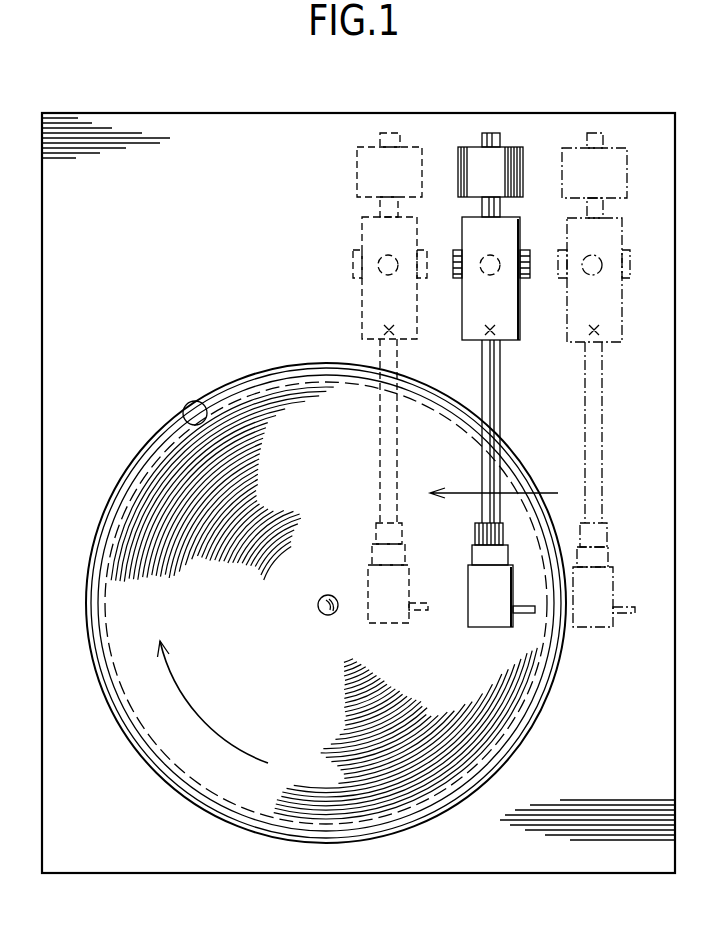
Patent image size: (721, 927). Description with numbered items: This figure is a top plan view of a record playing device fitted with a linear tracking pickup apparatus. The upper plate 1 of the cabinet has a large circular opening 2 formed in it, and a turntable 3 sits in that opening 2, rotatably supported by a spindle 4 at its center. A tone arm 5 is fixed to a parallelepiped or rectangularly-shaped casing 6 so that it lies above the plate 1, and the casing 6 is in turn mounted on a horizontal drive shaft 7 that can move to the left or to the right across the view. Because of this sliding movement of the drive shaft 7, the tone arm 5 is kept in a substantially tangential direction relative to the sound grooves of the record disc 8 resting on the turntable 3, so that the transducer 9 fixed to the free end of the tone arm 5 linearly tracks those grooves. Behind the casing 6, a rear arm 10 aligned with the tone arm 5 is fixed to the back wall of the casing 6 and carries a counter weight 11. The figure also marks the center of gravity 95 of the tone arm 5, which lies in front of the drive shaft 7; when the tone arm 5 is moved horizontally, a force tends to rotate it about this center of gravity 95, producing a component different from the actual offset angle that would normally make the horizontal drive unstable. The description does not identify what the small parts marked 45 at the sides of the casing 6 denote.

The upper plate 1 is at (208, 128).
The circular opening 2 is at (188, 422).
The turntable 3 is at (130, 478).
The spindle 4 is at (318, 607).
The tone arm 5 is at (397, 417).
The casing 6 is at (362, 295).
The horizontal drive shaft 7 is at (397, 256).
The record disc 8 is at (190, 743).
The transducer 9 is at (408, 624).
The rear arm 10 is at (380, 208).
The counter weight 11 is at (403, 145).
The guide tab 45 is at (353, 260).
The center of gravity 95 is at (397, 325).